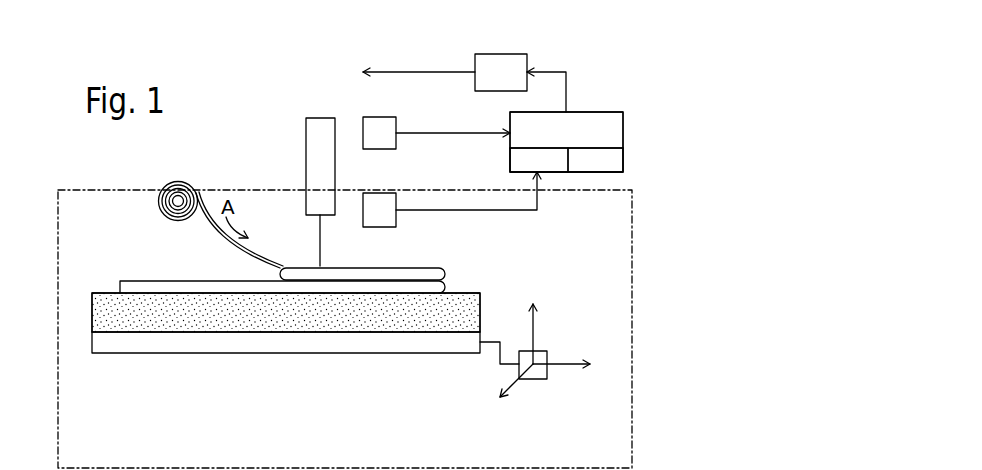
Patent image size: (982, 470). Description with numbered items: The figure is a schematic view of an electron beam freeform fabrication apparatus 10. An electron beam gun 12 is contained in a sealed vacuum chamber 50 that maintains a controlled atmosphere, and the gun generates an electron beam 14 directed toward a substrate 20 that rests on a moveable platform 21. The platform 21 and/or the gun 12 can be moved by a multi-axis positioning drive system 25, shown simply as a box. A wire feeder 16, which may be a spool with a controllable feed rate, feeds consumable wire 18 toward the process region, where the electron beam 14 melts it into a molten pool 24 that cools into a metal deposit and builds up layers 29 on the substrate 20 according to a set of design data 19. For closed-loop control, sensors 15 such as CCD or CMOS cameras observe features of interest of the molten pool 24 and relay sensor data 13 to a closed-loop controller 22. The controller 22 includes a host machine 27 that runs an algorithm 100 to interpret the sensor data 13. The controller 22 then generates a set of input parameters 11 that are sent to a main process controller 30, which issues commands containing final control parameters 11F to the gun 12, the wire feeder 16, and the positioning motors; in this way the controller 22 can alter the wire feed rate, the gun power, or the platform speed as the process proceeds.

The apparatus 10 is at (592, 38).
The input parameters 11 is at (561, 70).
The final control parameters 11F is at (463, 70).
The electron beam gun 12 is at (306, 135).
The sensor data 13 is at (420, 133).
The electron beam 14 is at (322, 226).
The sensors 15 is at (363, 126).
The wire feeder 16 is at (158, 203).
The consumable wire 18 is at (213, 246).
The design data 19 is at (595, 160).
The substrate 20 is at (92, 325).
The moveable platform 21 is at (213, 354).
The closed-loop controller 22 is at (598, 100).
The molten pool 24 is at (318, 267).
The multi-axis positioning drive system 25 is at (541, 351).
The host machine 27 is at (623, 133).
The layers 29 is at (448, 287).
The main process controller 30 is at (510, 54).
The vacuum chamber 50 is at (58, 230).
The algorithm 100 is at (539, 160).